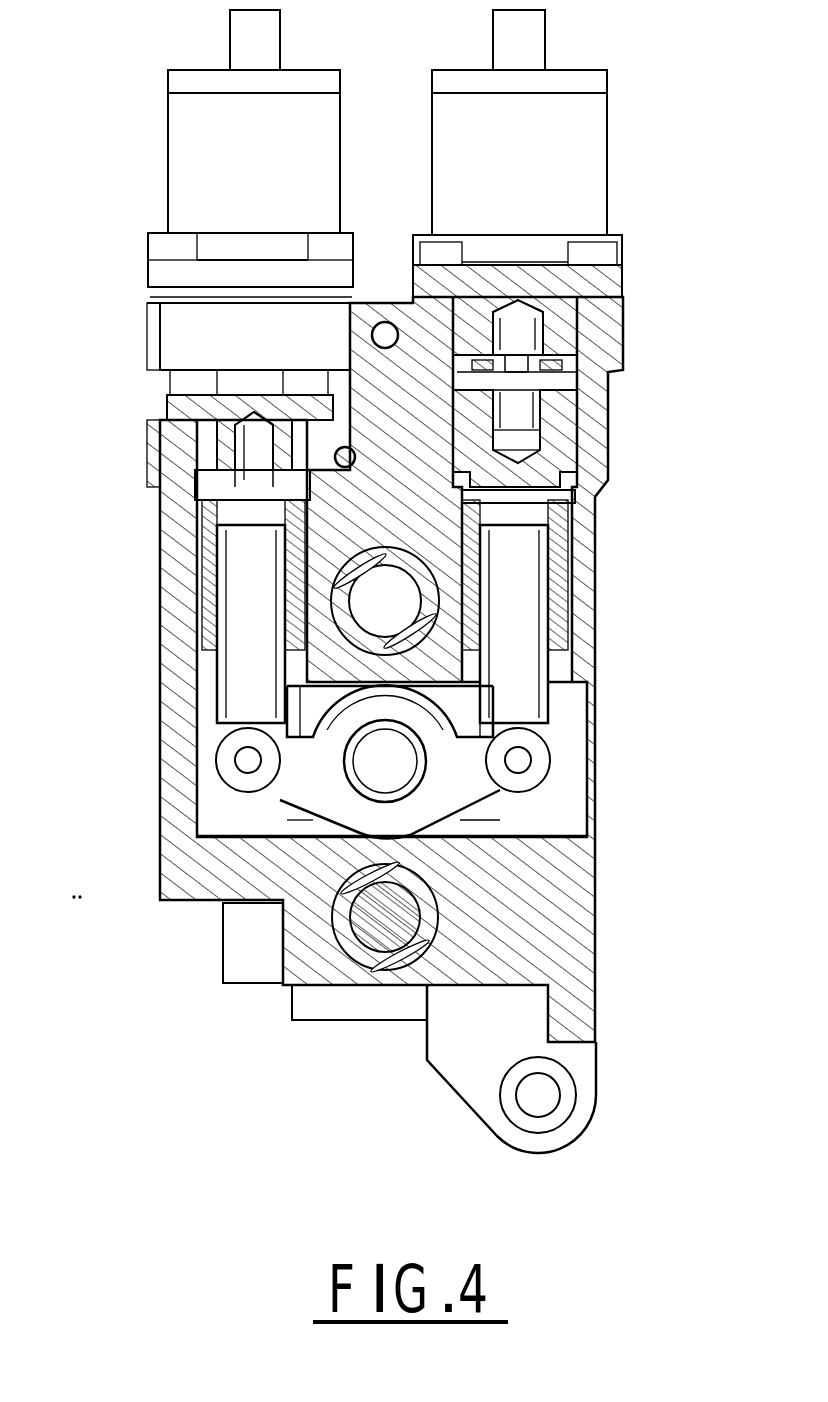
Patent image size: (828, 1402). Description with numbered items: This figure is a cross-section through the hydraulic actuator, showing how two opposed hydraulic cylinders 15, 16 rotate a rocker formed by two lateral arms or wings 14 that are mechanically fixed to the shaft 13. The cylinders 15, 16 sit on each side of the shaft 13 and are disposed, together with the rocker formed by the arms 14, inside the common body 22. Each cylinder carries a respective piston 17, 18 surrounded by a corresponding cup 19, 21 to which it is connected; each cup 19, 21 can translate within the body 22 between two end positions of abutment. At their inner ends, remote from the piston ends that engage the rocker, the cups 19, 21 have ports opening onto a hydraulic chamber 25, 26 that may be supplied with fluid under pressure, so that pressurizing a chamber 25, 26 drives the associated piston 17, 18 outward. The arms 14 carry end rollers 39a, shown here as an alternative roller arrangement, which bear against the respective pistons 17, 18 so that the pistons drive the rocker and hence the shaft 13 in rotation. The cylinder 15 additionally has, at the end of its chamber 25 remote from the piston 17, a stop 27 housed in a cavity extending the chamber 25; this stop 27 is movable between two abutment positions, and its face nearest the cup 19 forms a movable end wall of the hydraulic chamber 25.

The shaft 13 is at (352, 782).
The lateral wings 14 is at (287, 803).
The hydraulic cylinder 15 is at (572, 563).
The hydraulic cylinder 16 is at (197, 571).
The piston 17 is at (535, 697).
The piston 18 is at (240, 653).
The cup 19 is at (595, 593).
The cup 21 is at (200, 527).
The body 22 is at (594, 914).
The hydraulic chamber 25 is at (594, 520).
The hydraulic chamber 26 is at (198, 486).
The stop 27 is at (560, 430).
The end rollers 39a is at (214, 755).